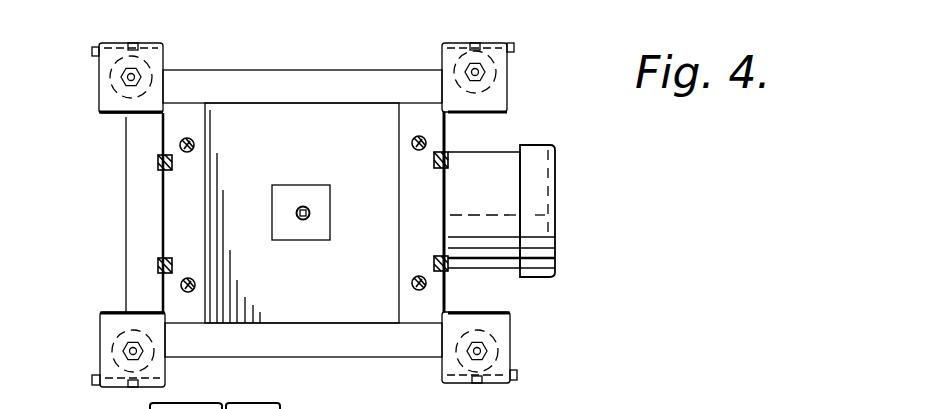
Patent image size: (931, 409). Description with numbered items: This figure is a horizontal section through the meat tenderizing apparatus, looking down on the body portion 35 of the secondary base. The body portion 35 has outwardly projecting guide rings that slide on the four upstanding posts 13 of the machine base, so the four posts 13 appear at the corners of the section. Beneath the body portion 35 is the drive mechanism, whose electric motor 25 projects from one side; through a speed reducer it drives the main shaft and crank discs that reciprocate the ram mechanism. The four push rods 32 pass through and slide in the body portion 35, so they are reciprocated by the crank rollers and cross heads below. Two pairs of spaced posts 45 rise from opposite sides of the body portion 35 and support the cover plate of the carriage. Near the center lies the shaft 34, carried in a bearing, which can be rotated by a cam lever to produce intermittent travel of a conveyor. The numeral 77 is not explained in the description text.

The upstanding post 13 is at (110, 80).
The electric motor 25 is at (510, 180).
The push rod 32 is at (194, 142).
The shaft 34 is at (303, 207).
The body portion 35 is at (222, 212).
The spaced post 45 is at (158, 162).
The frame 77 is at (376, 66).